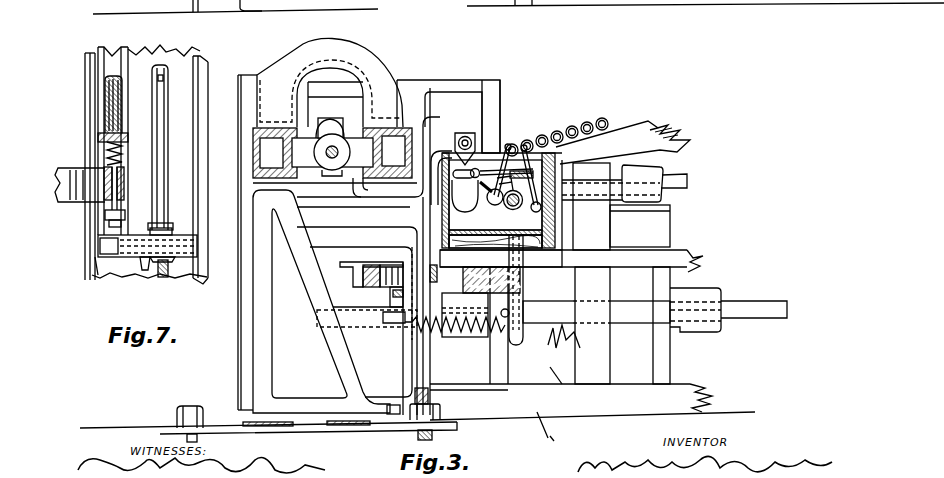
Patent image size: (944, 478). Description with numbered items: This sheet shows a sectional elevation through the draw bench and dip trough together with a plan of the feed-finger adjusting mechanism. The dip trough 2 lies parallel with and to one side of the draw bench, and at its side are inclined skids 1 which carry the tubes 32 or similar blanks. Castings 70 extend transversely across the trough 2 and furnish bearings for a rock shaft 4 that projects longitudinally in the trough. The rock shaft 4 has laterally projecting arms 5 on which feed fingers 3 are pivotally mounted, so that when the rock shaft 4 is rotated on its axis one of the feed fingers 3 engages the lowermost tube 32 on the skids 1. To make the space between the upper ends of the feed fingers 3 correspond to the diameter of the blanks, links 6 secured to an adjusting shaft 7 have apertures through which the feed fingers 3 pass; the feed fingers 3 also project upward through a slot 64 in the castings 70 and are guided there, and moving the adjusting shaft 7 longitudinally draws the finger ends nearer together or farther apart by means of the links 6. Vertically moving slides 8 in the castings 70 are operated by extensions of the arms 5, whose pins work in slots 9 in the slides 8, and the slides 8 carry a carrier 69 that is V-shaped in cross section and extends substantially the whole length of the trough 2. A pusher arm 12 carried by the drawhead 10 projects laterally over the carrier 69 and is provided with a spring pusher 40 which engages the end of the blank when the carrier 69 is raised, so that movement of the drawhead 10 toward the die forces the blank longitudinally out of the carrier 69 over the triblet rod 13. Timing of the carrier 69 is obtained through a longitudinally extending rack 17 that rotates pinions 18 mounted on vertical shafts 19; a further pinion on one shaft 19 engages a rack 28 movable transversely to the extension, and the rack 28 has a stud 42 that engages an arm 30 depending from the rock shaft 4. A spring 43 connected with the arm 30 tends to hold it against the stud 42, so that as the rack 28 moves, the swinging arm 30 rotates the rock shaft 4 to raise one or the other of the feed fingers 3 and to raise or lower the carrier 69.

In FIG. 3, the inclined skids 1 is at (645, 123).
In FIG. 3, the dip trough 2 is at (532, 253).
In FIG. 3, the feed fingers 3 is at (522, 160).
In FIG. 7, the rock shaft 4 is at (162, 70).
In FIG. 3, the rock shaft 4 is at (518, 208).
In FIG. 3, the arms 5 is at (491, 200).
In FIG. 7, the links 6 is at (155, 261).
In FIG. 3, the links 6 is at (510, 178).
In FIG. 7, the adjusting shaft 7 is at (163, 78).
In FIG. 3, the adjusting shaft 7 is at (521, 183).
In FIG. 7, the slides 8 is at (98, 257).
In FIG. 3, the slides 8 is at (460, 178).
In FIG. 3, the slots 9 is at (470, 178).
In FIG. 3, the drawhead 10 is at (339, 120).
In FIG. 7, the pusher arm 12 is at (67, 203).
In FIG. 3, the pusher arm 12 is at (440, 138).
In FIG. 7, the triblet rod 13 is at (160, 274).
In FIG. 3, the triblet rod 13 is at (508, 160).
In FIG. 3, the rack 17 is at (362, 277).
In FIG. 3, the pinions 18 is at (387, 279).
In FIG. 3, the vertical shafts 19 is at (399, 298).
In FIG. 3, the rack 28 is at (355, 322).
In FIG. 3, the arm 30 is at (517, 345).
In FIG. 7, the tubes 32 is at (112, 92).
In FIG. 3, the tubes 32 is at (558, 129).
In FIG. 7, the spring pusher 40 is at (100, 135).
In FIG. 3, the spring pusher 40 is at (468, 138).
In FIG. 3, the stud 42 is at (509, 314).
In FIG. 3, the spring 43 is at (440, 322).
In FIG. 7, the slot 64 is at (143, 261).
In FIG. 7, the carrier 69 is at (117, 57).
In FIG. 3, the carrier 69 is at (480, 158).
In FIG. 7, the castings 70 is at (135, 238).
In FIG. 3, the castings 70 is at (547, 253).